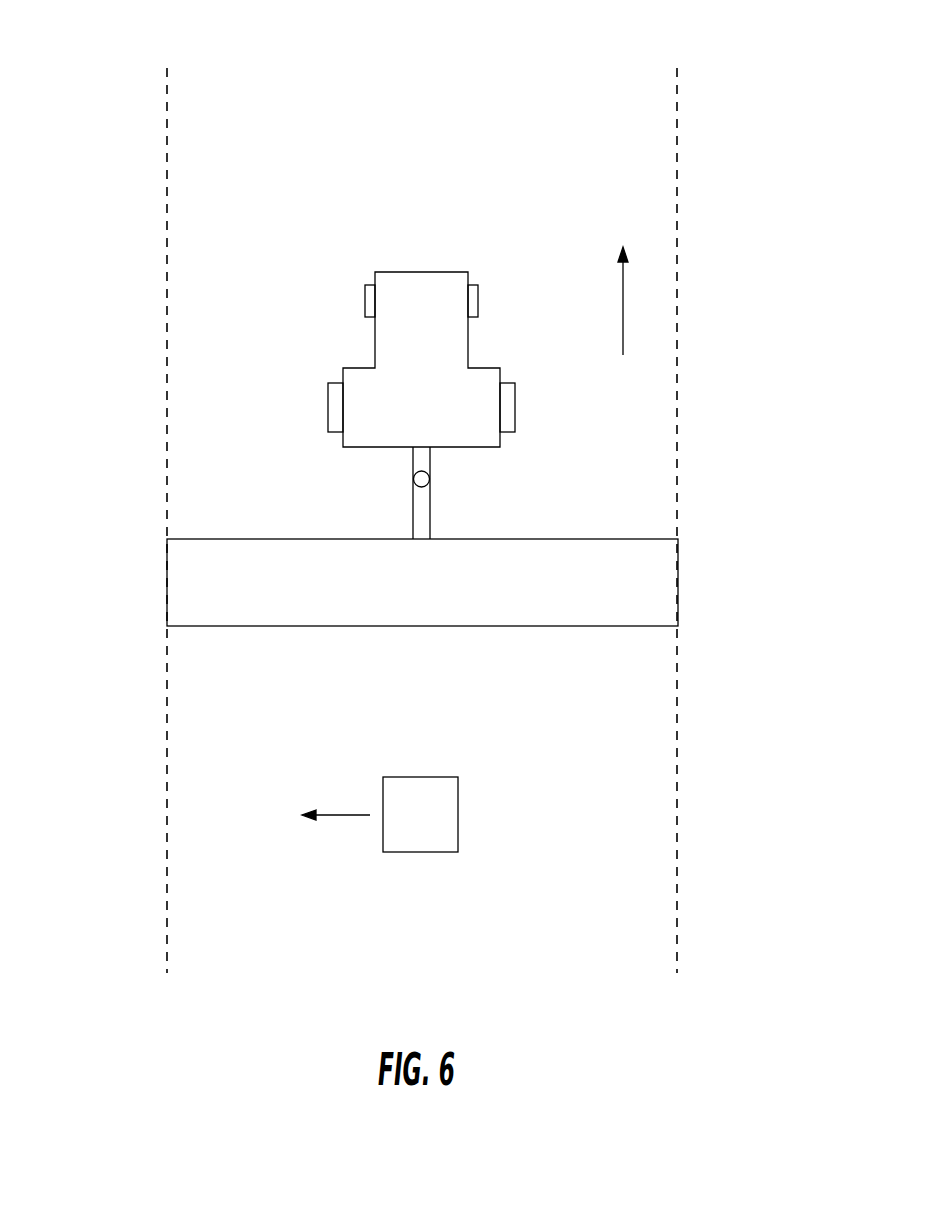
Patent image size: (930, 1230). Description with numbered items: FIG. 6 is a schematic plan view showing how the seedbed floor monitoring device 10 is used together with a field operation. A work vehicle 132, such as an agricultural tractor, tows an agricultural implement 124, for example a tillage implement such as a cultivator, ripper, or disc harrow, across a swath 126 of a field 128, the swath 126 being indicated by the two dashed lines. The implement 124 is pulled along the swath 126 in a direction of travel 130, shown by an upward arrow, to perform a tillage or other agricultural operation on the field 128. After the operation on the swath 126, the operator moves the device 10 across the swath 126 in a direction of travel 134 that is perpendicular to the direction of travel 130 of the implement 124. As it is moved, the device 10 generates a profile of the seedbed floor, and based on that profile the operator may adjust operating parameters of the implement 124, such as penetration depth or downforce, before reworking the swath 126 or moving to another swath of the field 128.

The seedbed floor monitoring device 10 is at (458, 814).
The agricultural implement 124 is at (275, 538).
The swath 126 is at (166, 292).
The field 128 is at (233, 96).
The direction of travel 130 is at (623, 302).
The work vehicle 132 is at (408, 272).
The direction of travel 134 is at (342, 815).